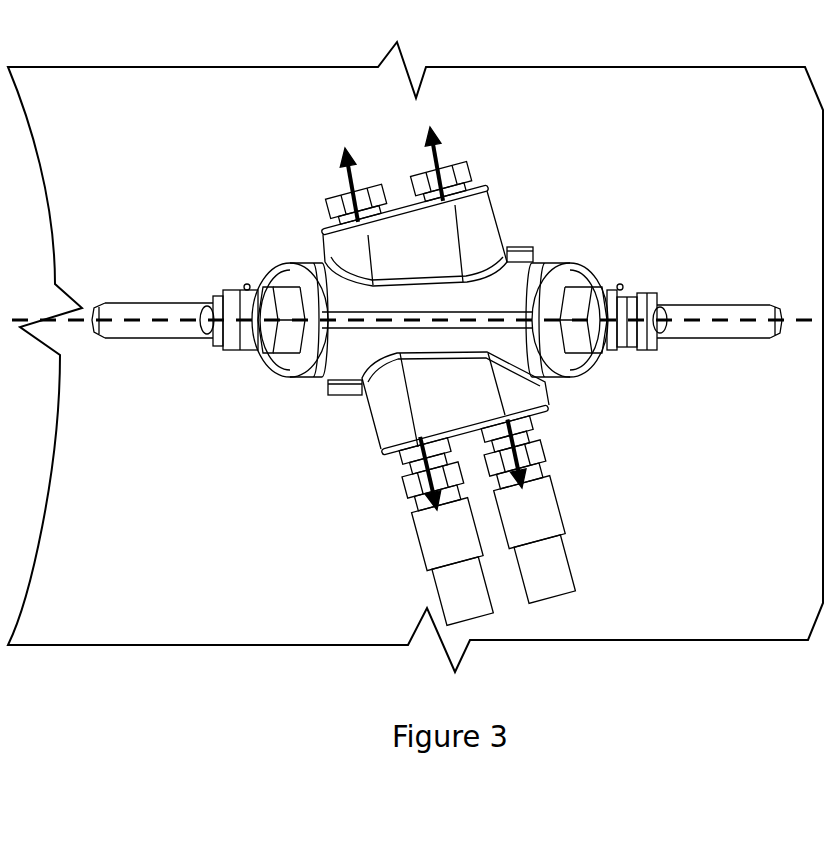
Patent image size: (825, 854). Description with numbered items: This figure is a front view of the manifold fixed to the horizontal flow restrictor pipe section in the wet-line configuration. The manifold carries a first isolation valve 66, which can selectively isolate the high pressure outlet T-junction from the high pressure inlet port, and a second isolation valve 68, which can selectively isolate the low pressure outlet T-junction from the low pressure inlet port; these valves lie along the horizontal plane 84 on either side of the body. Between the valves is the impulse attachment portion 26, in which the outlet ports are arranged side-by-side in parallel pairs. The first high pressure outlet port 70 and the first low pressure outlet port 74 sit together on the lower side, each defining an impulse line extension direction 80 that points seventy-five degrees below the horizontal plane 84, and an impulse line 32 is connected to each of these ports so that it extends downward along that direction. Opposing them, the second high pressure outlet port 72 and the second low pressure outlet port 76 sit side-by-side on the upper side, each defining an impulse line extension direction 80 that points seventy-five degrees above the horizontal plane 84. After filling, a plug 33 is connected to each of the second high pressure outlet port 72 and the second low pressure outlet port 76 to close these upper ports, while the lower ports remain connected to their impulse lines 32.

The impulse attachment portion 26 is at (529, 282).
The impulse line 32 is at (572, 563).
The plug 33 is at (410, 180).
The first isolation valve 66 is at (218, 296).
The second isolation valve 68 is at (657, 290).
The first high pressure outlet port 70 is at (405, 456).
The second high pressure outlet port 72 is at (333, 226).
The first low pressure outlet port 74 is at (541, 444).
The second low pressure outlet port 76 is at (456, 193).
The impulse line extension direction 80 is at (340, 163).
The horizontal plane 84 is at (793, 326).